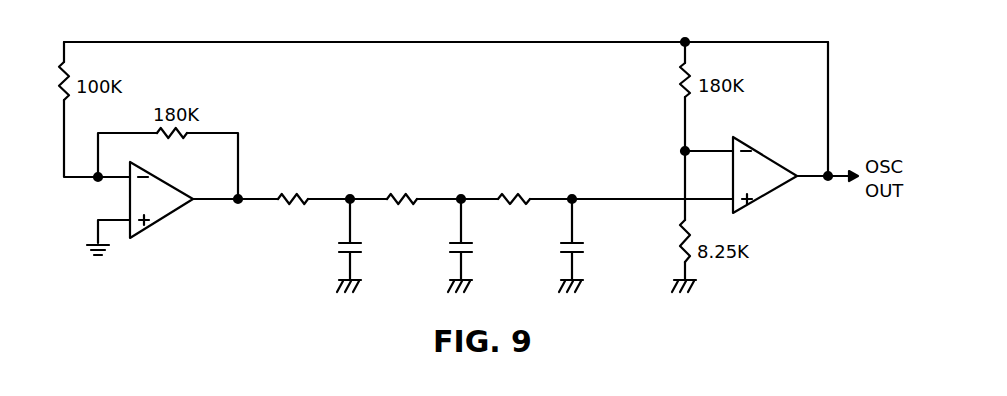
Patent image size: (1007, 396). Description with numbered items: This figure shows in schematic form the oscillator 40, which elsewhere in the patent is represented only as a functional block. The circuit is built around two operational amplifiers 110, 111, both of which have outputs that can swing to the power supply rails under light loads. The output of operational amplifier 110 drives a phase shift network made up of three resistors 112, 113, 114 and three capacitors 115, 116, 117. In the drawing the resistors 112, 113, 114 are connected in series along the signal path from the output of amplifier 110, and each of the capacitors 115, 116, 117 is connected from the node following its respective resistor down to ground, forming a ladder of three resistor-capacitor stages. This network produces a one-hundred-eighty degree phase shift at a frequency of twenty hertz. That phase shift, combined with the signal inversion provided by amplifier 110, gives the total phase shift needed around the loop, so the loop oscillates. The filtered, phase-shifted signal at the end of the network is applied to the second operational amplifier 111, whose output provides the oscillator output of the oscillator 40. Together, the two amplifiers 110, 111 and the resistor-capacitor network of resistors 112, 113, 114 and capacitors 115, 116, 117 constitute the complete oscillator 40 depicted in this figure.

The oscillator 40 is at (491, 26).
The operational amplifier 110 is at (172, 218).
The operational amplifier 111 is at (782, 190).
The resistor 112 is at (290, 205).
The resistor 113 is at (395, 205).
The resistor 114 is at (510, 205).
The capacitor 115 is at (340, 247).
The capacitor 116 is at (440, 257).
The capacitor 117 is at (563, 247).